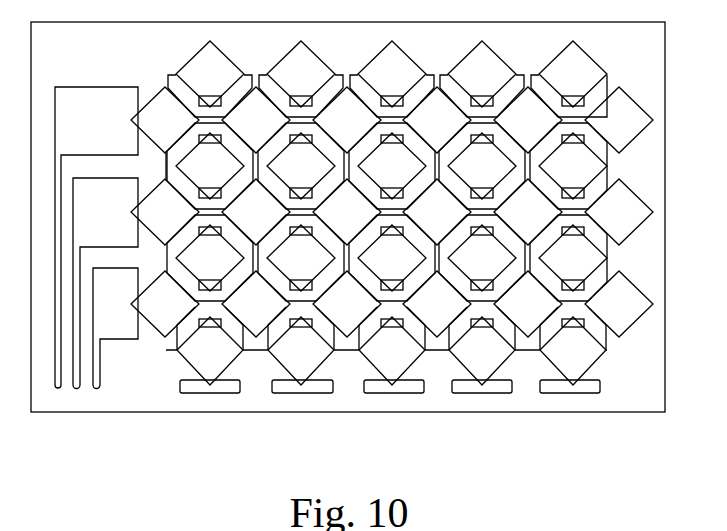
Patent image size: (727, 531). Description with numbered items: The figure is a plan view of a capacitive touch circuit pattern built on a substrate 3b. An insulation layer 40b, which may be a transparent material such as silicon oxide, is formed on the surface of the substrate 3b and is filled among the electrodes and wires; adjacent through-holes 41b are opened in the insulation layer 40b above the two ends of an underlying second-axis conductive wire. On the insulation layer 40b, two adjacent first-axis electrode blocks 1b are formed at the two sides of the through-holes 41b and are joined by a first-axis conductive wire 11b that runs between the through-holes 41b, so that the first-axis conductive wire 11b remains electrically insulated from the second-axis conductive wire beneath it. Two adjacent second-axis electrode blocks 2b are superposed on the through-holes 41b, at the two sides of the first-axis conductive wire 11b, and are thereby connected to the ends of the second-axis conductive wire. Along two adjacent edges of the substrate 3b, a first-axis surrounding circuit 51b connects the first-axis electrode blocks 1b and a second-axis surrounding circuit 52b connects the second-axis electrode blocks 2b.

The first-axis electrode block 1b is at (160, 106).
The second-axis electrode block 2b is at (198, 67).
The substrate 3b is at (535, 398).
The first-axis conductive wire 11b is at (164, 160).
The insulation layer 40b is at (607, 273).
The through-hole 41b is at (244, 98).
The first-axis surrounding circuit 51b is at (98, 94).
The second-axis surrounding circuit 52b is at (290, 393).